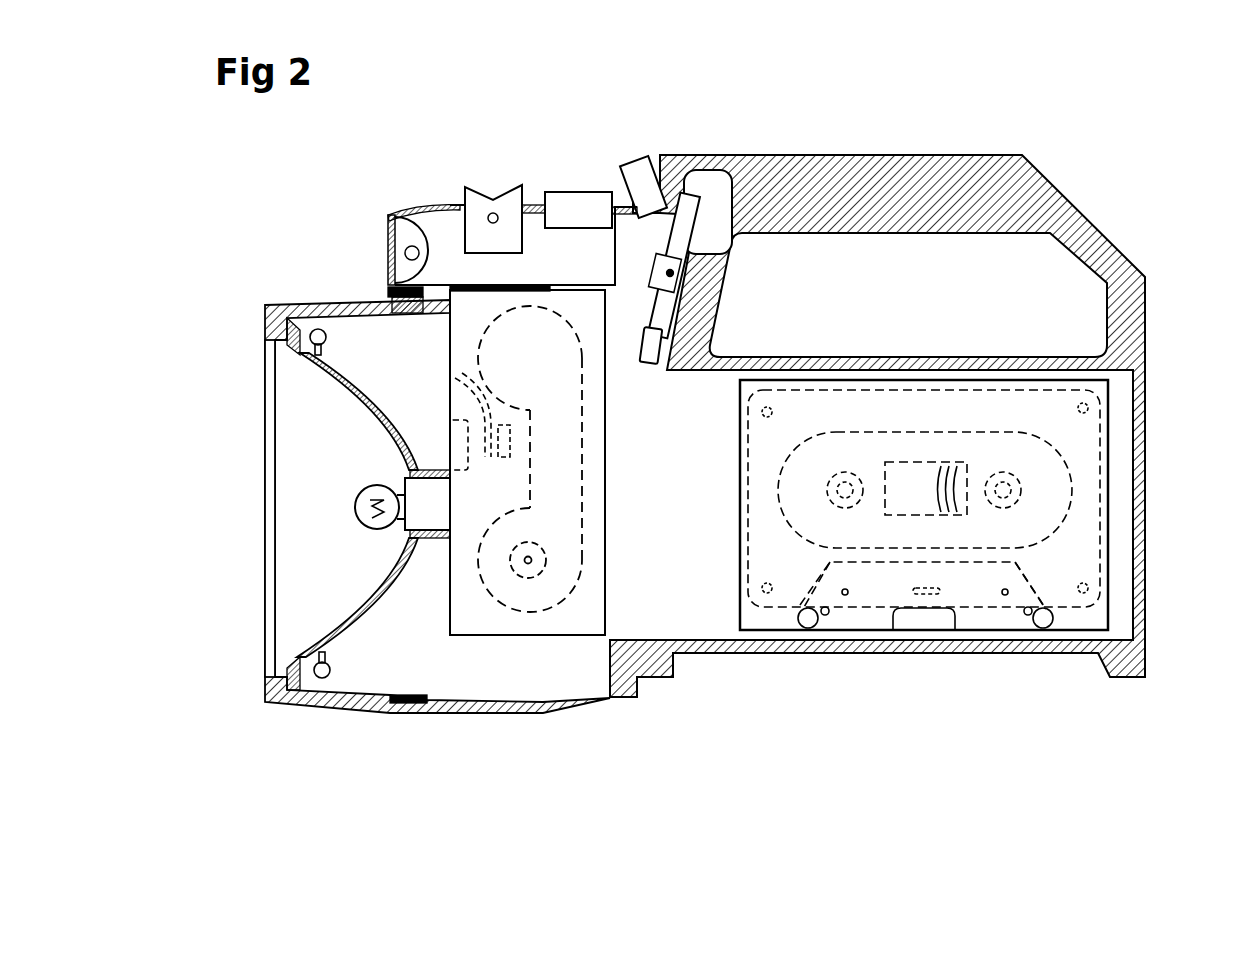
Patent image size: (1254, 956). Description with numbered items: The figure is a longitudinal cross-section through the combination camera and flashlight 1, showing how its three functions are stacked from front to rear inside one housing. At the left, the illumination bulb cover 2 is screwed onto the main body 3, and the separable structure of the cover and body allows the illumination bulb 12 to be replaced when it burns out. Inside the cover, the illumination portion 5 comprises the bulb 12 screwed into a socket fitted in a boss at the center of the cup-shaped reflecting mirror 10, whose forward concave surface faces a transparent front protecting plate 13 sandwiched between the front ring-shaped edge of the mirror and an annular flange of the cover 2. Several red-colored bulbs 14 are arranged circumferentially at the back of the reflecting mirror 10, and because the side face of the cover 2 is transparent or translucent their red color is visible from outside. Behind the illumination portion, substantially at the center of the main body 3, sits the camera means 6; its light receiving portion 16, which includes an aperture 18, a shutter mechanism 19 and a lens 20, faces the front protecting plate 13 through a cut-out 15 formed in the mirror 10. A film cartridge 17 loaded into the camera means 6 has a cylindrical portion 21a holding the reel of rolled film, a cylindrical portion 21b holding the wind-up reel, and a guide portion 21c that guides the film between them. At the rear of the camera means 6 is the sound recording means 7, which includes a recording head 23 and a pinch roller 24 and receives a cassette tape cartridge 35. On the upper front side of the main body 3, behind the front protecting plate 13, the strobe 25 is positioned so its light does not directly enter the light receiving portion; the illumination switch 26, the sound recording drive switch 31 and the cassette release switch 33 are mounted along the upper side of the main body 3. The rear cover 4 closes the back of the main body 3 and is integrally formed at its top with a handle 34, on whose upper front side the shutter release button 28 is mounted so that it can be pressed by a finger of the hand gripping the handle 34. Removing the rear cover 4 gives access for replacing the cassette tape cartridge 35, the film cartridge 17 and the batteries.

The combination camera and flashlight 1 is at (747, 125).
The illumination bulb cover 2 is at (350, 708).
The main body 3 is at (543, 713).
The rear cover 4 is at (1146, 322).
The illumination portion 5 is at (311, 548).
The camera means 6 is at (483, 638).
The sound recording means 7 is at (1112, 549).
The reflecting mirror 10 is at (333, 617).
The illumination bulb 12 is at (356, 503).
The front protecting plate 13 is at (285, 394).
The red-colored bulbs 14 is at (319, 329).
The cut-out 15 is at (365, 412).
The light receiving portion 16 is at (440, 437).
The film cartridge 17 is at (583, 494).
The aperture 18 is at (452, 424).
The shutter mechanism 19 is at (455, 380).
The lens 20 is at (510, 441).
The cylindrical portion 21a is at (567, 558).
The cylindrical portion 21b is at (560, 366).
The guide portion 21c is at (562, 458).
The recording head 23 is at (905, 637).
The pinch roller 24 is at (795, 637).
The strobe 25 is at (387, 243).
The illumination switch 26 is at (483, 205).
The shutter release button 28 is at (644, 156).
The sound recording drive switch 31 is at (585, 169).
The cassette release switch 33 is at (573, 208).
The handle 34 is at (902, 163).
The cassette tape cartridge 35 is at (1083, 447).